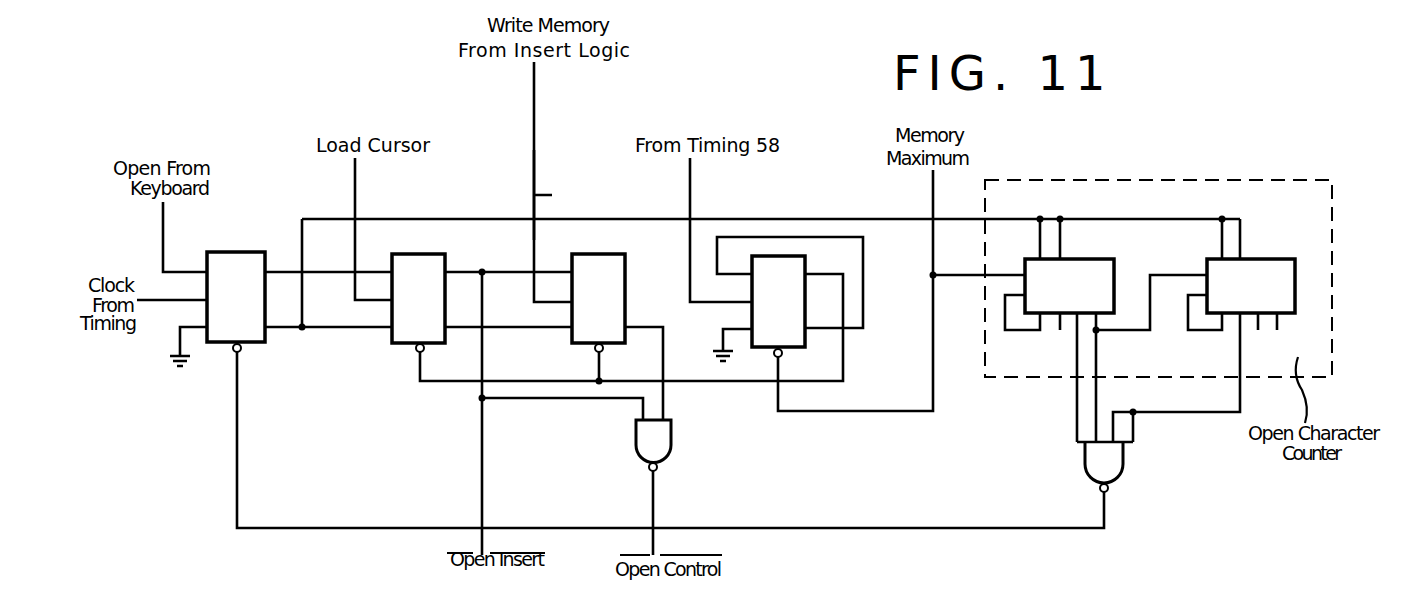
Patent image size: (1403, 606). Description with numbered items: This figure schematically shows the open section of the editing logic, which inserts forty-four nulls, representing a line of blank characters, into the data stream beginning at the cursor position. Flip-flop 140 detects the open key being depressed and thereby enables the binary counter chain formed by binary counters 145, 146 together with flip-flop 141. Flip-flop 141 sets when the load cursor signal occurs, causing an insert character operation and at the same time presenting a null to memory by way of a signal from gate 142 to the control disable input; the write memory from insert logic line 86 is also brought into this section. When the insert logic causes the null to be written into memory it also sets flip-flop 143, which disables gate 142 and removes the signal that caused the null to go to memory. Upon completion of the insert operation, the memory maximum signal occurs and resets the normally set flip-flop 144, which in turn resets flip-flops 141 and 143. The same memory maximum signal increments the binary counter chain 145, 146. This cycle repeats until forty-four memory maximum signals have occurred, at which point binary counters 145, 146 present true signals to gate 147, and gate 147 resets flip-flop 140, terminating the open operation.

The flip-flop 140 is at (237, 258).
The flip-flop 141 is at (412, 262).
The gate 142 is at (661, 437).
The flip-flop 143 is at (591, 262).
The flip-flop 144 is at (784, 264).
The binary counter 145 is at (1100, 265).
The binary counter 146 is at (1262, 264).
The gate 147 is at (1113, 458).
The write memory line 86 is at (557, 195).